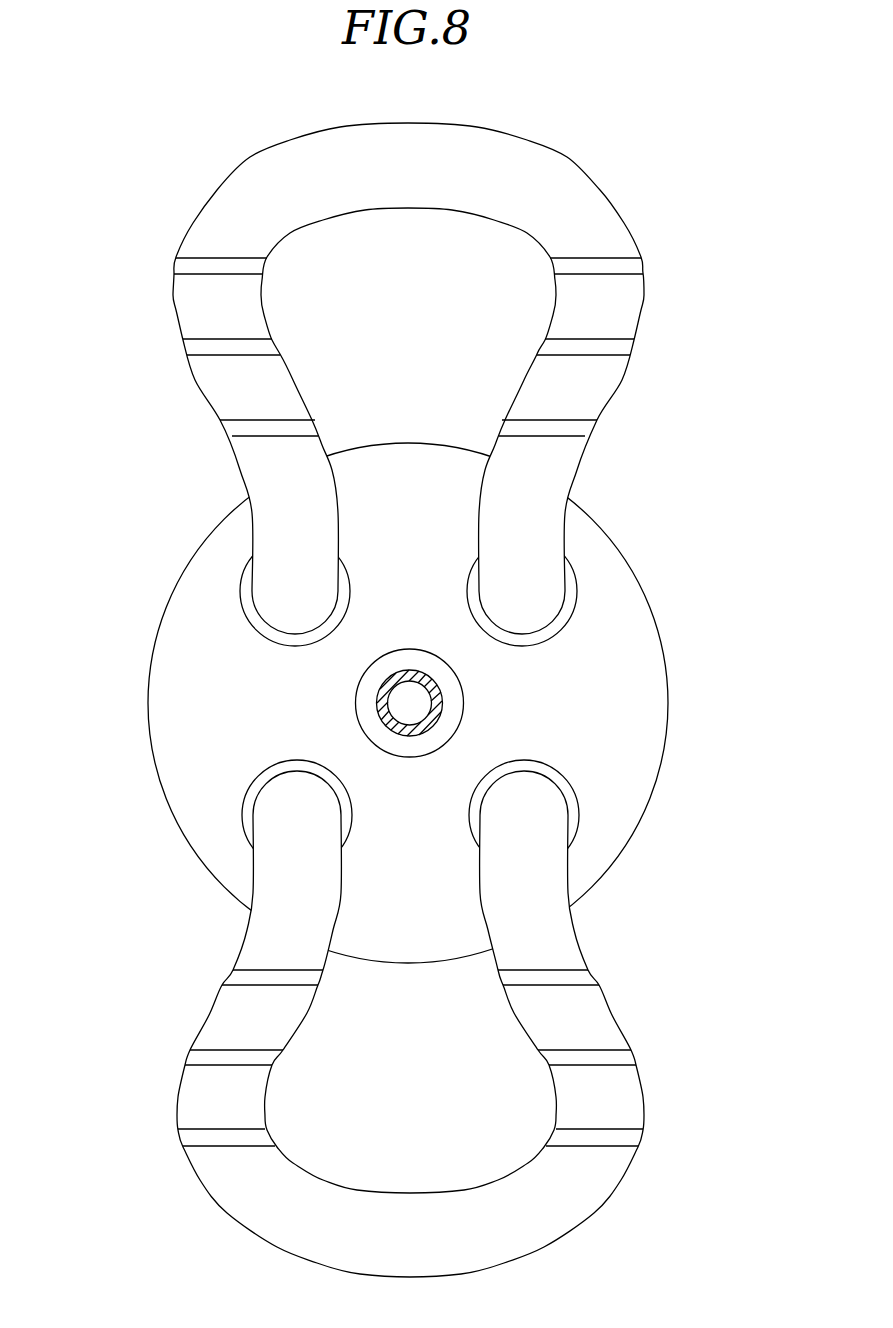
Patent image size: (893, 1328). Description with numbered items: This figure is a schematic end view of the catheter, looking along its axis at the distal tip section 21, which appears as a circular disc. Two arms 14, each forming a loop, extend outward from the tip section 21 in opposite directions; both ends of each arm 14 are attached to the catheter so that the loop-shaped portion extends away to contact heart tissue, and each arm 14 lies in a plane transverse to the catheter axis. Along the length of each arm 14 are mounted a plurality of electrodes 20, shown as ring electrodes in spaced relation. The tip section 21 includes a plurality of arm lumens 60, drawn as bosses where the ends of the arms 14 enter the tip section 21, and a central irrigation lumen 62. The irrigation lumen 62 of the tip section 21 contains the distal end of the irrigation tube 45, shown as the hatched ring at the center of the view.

The arm 14 is at (490, 153).
The electrode 20 is at (593, 338).
The tip section 21 is at (178, 585).
The arm lumen 60 is at (570, 620).
The irrigation lumen 62 is at (463, 703).
The irrigation tube 45 is at (441, 721).